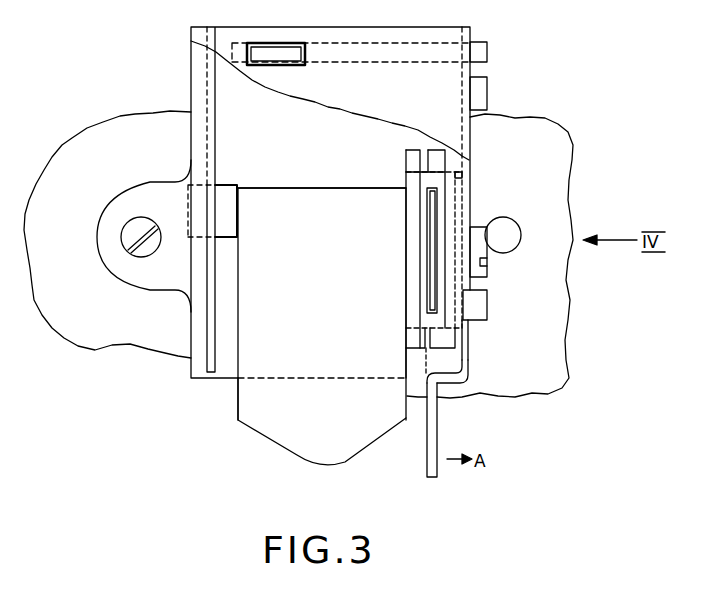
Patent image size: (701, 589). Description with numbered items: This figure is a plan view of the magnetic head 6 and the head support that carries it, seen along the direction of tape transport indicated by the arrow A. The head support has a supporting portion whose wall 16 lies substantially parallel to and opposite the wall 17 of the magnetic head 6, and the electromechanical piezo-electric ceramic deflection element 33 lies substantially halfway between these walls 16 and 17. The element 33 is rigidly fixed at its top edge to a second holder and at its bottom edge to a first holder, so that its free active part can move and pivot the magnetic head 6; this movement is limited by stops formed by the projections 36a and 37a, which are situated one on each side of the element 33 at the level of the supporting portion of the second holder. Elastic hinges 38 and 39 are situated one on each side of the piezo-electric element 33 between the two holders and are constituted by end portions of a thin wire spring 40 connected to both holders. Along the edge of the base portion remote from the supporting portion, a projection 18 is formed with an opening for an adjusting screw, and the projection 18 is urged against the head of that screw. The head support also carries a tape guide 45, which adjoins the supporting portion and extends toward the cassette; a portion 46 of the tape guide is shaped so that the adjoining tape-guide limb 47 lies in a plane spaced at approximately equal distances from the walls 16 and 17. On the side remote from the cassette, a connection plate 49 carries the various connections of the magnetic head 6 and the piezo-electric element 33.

The magnetic head 6 is at (261, 435).
The wall 16 is at (463, 202).
The wall 17 is at (405, 263).
The projection 18 is at (153, 191).
The piezo-electric ceramic deflection element 33 is at (428, 217).
The projection 36a is at (413, 160).
The projection 37a is at (438, 149).
The elastic hinge 38 is at (440, 167).
The elastic hinge 39 is at (440, 330).
The wire spring 40 is at (461, 183).
The tape guide 45 is at (470, 368).
The portion of the tape guide 46 is at (470, 343).
The tape-guide limb 47 is at (436, 430).
The connection plate 49 is at (482, 53).